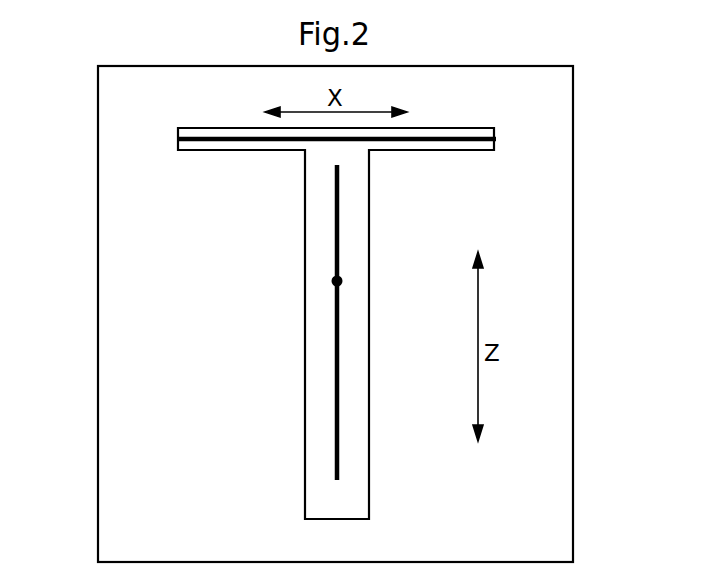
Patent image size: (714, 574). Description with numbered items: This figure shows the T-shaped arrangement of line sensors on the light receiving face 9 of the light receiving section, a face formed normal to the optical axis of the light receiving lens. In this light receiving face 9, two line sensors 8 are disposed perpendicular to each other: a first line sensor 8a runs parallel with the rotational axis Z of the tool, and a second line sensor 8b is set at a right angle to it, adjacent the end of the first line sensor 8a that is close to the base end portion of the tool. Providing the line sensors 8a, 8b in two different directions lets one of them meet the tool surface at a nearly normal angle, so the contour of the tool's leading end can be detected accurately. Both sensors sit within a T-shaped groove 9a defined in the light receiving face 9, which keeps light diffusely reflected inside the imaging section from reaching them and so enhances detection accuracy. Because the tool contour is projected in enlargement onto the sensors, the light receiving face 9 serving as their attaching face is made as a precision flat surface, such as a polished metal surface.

The light receiving face 9 is at (114, 282).
The T-shaped groove 9a is at (222, 150).
The line sensor 8 is at (348, 285).
The first line sensor 8a is at (335, 323).
The second line sensor 8b is at (430, 137).